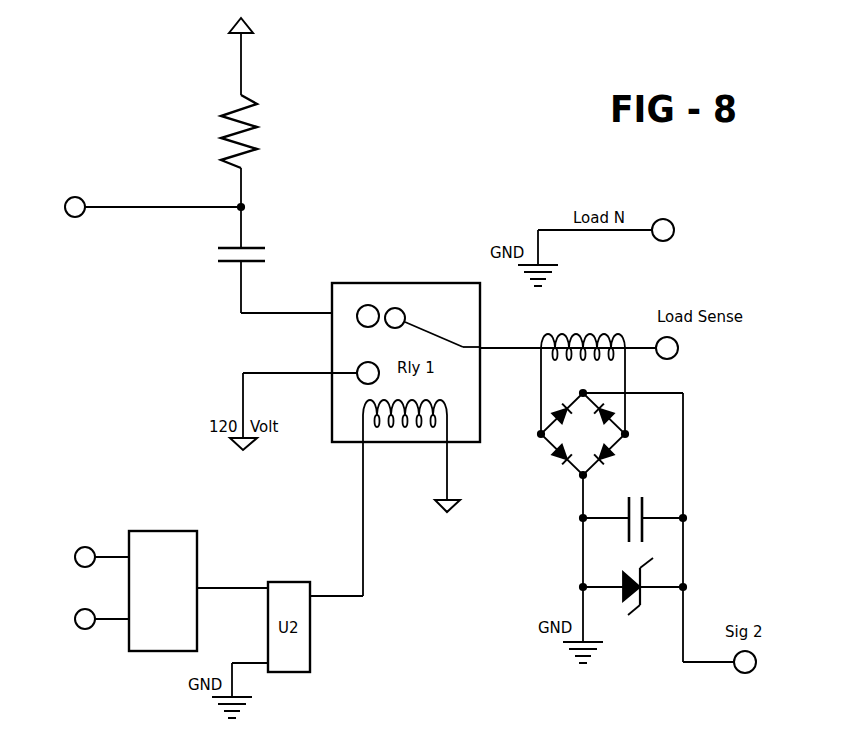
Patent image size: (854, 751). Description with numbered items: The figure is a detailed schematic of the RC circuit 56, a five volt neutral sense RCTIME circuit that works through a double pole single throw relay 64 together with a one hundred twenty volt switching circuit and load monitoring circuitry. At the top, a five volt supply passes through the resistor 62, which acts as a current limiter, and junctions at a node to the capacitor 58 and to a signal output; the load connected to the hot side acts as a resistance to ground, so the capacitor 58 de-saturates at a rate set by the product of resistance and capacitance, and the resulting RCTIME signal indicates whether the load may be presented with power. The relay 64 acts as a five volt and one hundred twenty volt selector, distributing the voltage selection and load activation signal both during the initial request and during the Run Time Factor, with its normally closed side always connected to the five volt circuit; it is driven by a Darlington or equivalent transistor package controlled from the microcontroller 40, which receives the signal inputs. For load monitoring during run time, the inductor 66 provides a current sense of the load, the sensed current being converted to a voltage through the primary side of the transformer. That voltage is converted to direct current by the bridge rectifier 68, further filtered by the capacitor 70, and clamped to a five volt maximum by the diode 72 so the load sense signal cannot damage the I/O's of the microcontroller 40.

The microcontroller 40 is at (164, 531).
The RC circuit 56 is at (146, 166).
The capacitor 58 is at (243, 228).
The resistor 62 is at (241, 65).
The double pole single throw relay 64 is at (388, 443).
The inductor 66 is at (615, 337).
The bridge rectifier 68 is at (545, 447).
The capacitor 70 is at (671, 516).
The diode 72 is at (600, 587).